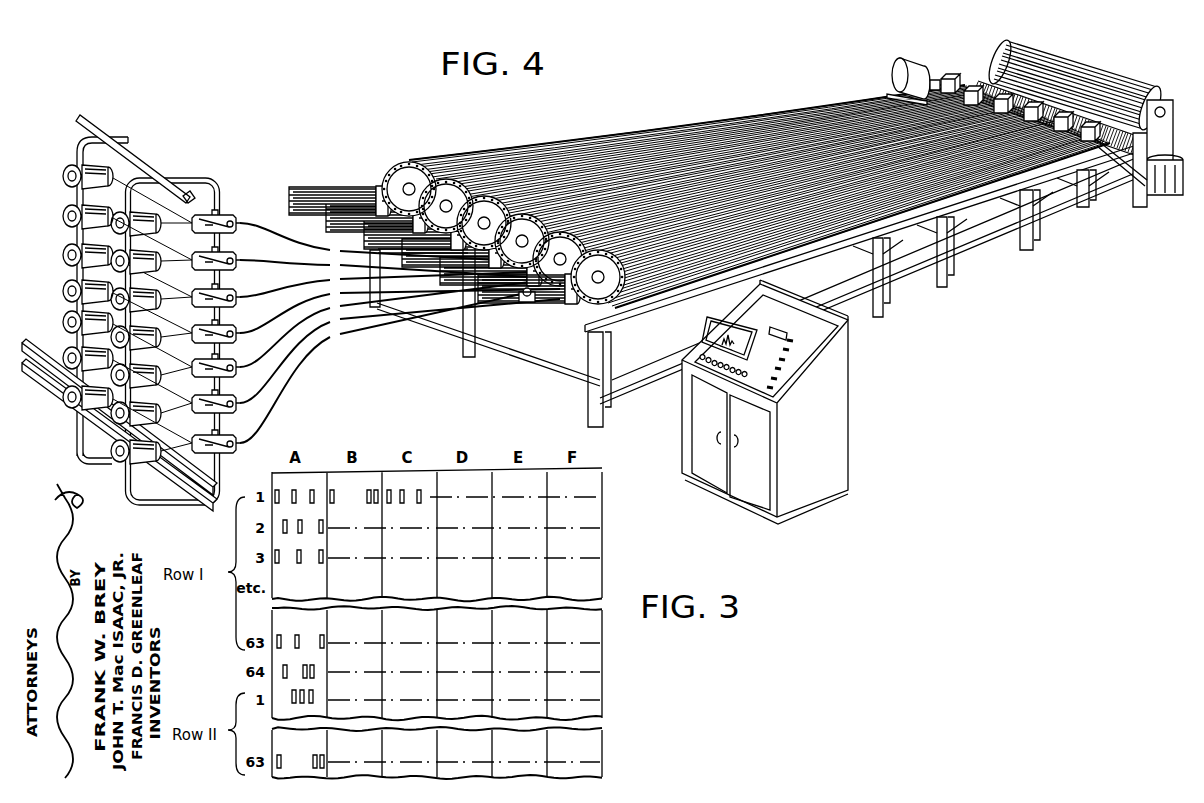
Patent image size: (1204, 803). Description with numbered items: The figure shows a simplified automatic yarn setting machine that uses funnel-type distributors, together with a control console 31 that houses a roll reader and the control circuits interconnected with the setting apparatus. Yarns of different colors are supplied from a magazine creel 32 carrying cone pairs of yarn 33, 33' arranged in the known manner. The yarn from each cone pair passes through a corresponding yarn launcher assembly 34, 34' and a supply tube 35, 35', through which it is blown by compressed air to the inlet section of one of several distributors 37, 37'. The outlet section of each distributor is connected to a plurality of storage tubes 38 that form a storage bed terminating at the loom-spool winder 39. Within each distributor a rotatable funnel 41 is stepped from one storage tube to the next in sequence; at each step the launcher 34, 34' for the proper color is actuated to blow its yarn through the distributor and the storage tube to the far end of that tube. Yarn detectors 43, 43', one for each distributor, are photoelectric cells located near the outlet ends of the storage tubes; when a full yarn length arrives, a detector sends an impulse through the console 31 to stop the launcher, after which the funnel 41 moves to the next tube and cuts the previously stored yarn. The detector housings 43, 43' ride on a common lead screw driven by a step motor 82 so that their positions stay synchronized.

The control console 31 is at (841, 393).
The magazine creel 32 is at (172, 126).
The cone pair of yarn 33 is at (127, 314).
The cone pair of yarn 33' is at (151, 255).
The yarn launcher assembly 34 is at (223, 317).
The yarn launcher assembly 34' is at (225, 250).
The supply tube 35 is at (400, 321).
The supply tube 35' is at (385, 280).
The distributor 37 is at (438, 249).
The distributor 37' is at (562, 298).
The storage tubes 38 is at (678, 274).
The loom-spool winder 39 is at (1097, 90).
The rotatable funnel 41 is at (527, 300).
The yarn detector 43 is at (1031, 128).
The yarn detector 43' is at (1017, 70).
The step motor 82 is at (893, 65).